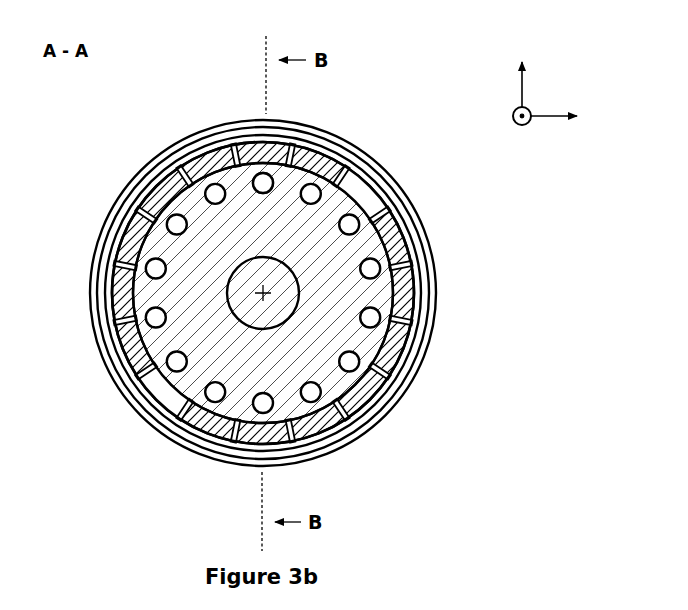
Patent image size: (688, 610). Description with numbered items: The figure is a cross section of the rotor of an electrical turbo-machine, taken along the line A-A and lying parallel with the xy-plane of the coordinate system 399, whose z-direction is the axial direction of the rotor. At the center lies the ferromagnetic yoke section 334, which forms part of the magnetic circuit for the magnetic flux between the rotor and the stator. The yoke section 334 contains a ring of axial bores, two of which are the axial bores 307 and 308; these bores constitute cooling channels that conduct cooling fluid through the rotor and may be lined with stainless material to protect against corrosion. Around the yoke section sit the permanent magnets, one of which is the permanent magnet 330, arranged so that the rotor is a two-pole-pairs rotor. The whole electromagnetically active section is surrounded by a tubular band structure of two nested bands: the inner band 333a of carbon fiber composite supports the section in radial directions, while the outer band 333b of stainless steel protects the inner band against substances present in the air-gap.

The permanent magnet 330 is at (257, 144).
The inner band 333a is at (162, 165).
The outer band 333b is at (334, 141).
The ferromagnetic yoke section 334 is at (232, 246).
The axial bore 307 is at (262, 193).
The axial bore 308 is at (262, 393).
The coordinate system 399 is at (578, 93).